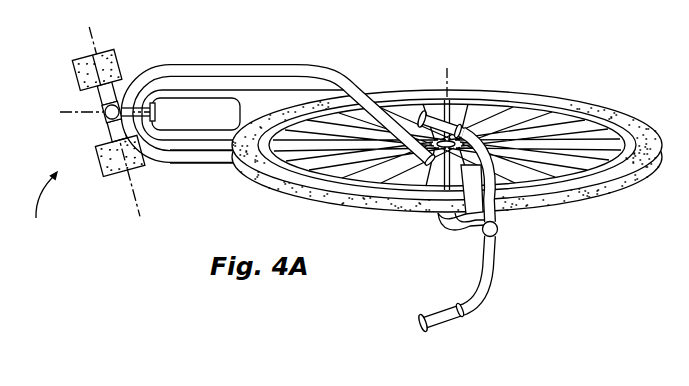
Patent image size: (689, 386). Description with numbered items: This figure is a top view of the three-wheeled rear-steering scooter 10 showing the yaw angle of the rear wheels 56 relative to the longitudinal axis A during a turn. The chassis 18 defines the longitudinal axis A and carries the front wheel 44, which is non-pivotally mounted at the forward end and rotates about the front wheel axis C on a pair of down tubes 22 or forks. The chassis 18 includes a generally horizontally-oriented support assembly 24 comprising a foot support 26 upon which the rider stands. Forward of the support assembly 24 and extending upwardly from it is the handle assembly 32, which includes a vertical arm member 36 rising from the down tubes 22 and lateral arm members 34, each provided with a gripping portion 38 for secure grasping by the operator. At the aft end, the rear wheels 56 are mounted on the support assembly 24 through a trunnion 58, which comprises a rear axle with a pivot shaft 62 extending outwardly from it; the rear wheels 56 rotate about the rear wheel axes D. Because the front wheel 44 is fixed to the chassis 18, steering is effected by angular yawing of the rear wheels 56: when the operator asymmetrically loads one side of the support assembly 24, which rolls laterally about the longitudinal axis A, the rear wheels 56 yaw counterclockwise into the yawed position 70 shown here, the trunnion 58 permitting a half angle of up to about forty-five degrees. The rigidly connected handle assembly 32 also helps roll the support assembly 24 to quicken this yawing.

The three-wheeled rear-steering scooter 10 is at (345, 188).
The chassis 18 is at (232, 63).
The down tubes 22 is at (427, 180).
The support assembly 24 is at (319, 63).
The foot support 26 is at (192, 163).
The handle assembly 32 is at (505, 244).
The lateral arm members 34 is at (516, 208).
The vertical arm member 36 is at (484, 233).
The gripping portion 38 is at (419, 112).
The front wheel 44 is at (643, 124).
The rear wheels 56 is at (76, 64).
The trunnion 58 is at (99, 97).
The pivot shaft 62 is at (134, 80).
The yawed position 70 is at (41, 204).
The longitudinal axis A is at (71, 119).
The front wheel axis C is at (452, 86).
The rear wheel axes D is at (136, 201).